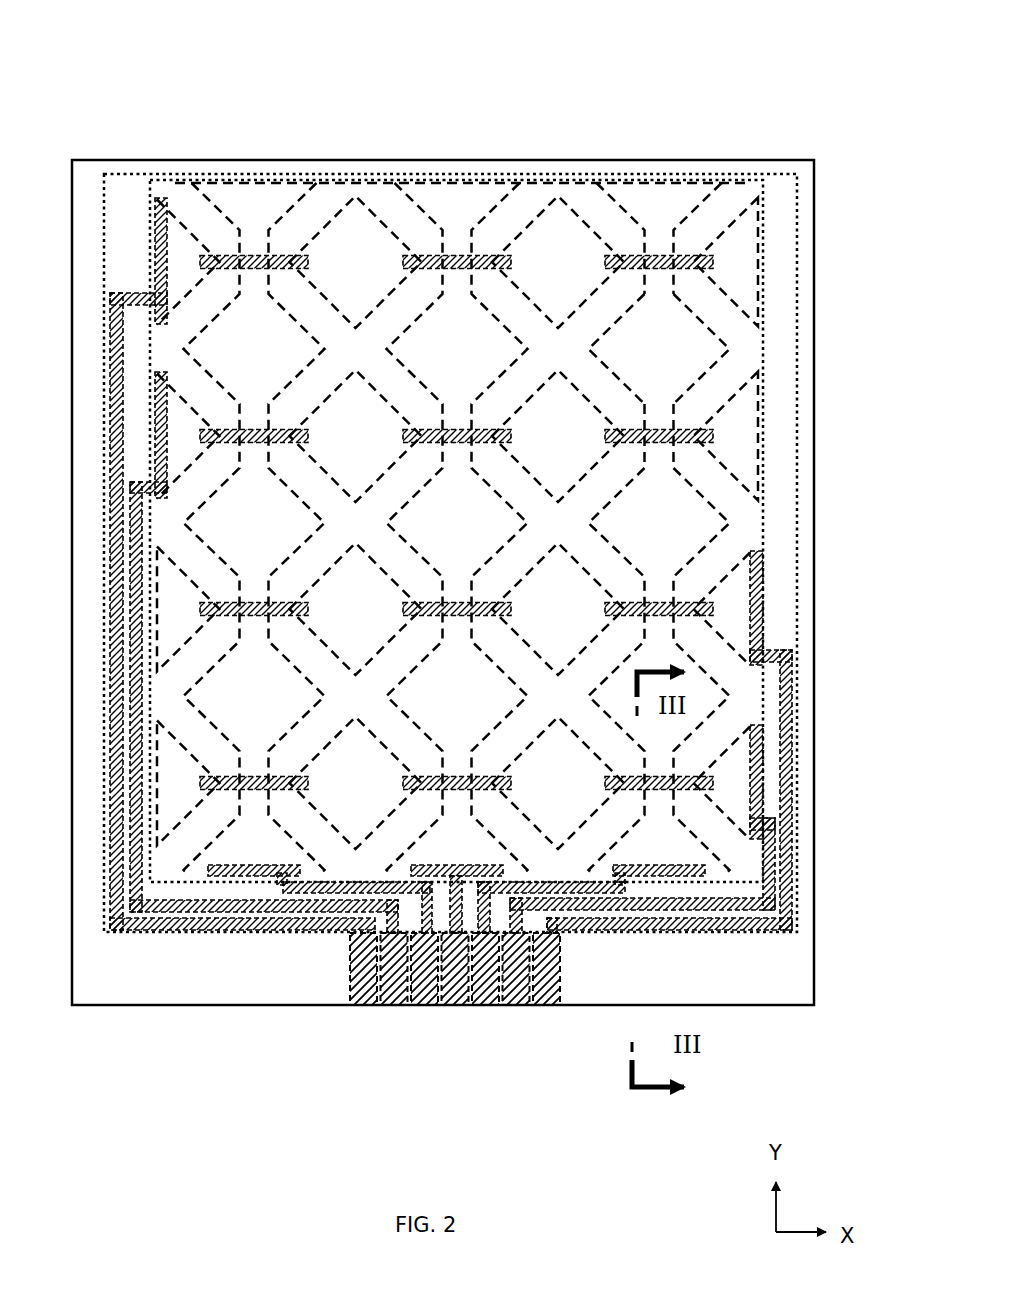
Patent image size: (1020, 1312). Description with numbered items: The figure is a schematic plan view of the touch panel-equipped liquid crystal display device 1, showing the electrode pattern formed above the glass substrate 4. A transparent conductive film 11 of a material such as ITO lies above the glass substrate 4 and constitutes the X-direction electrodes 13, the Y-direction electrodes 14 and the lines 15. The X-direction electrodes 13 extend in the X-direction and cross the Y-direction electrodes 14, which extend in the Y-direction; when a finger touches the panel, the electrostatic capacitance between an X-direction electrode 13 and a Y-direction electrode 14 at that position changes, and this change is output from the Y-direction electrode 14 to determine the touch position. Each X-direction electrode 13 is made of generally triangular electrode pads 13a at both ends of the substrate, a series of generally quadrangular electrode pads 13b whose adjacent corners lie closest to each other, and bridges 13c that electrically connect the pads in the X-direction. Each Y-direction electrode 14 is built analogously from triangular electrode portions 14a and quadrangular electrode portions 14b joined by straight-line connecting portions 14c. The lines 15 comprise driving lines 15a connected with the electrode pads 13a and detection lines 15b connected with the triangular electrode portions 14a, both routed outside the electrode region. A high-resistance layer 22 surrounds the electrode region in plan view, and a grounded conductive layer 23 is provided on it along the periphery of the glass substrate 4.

The touch panel 1 is at (820, 72).
The glass substrate 4 is at (754, 988).
The transparent conductive film 11 is at (218, 70).
The X-direction electrodes 13 is at (178, 210).
The generally triangular electrode pads 13a is at (741, 183).
The generally quadrangular electrode pads 13b is at (556, 215).
The bridges 13c is at (455, 244).
The Y-direction electrodes 14 is at (220, 181).
The triangular electrode portions 14a is at (657, 205).
The quadrangular electrode portions 14b is at (712, 357).
The connecting portions 14c is at (668, 460).
The lines 15 is at (125, 292).
The driving lines 15a is at (127, 935).
The detection lines 15b is at (578, 933).
The high-resistance layer 22 is at (218, 935).
The conductive layer 23 is at (290, 985).